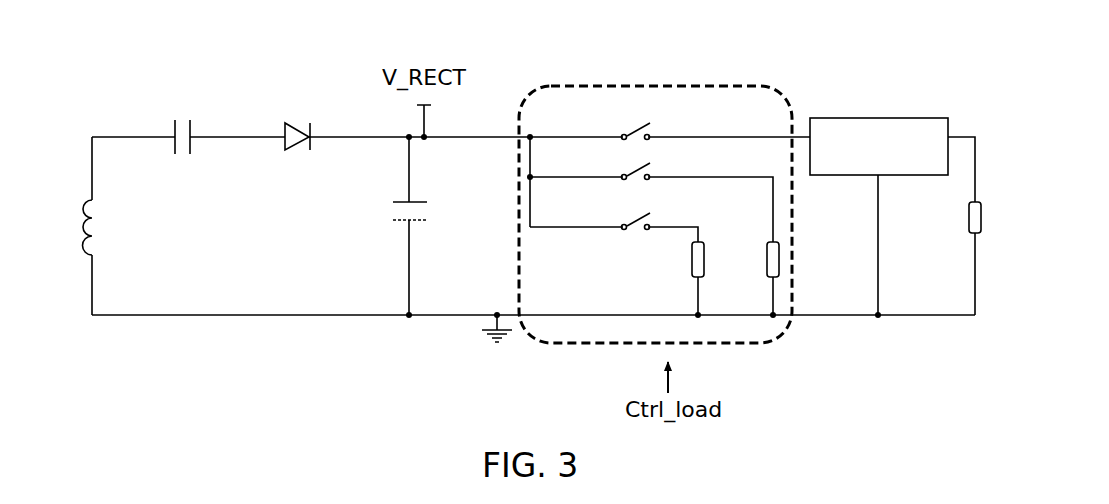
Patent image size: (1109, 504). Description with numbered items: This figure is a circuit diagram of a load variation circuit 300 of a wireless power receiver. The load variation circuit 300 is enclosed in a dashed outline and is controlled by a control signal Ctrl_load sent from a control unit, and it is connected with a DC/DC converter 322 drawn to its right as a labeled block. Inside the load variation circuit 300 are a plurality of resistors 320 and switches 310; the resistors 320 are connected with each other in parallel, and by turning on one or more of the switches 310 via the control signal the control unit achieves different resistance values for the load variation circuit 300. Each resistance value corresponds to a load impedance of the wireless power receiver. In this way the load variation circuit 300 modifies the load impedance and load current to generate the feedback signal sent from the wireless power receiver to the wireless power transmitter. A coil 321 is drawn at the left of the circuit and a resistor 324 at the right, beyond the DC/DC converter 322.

The load variation circuit 300 is at (662, 72).
The switches 310 is at (639, 243).
The resistors 320 is at (716, 259).
The receiver coil 321 is at (124, 242).
The DC/DC converter 322 is at (872, 114).
The output load resistor 324 is at (962, 216).